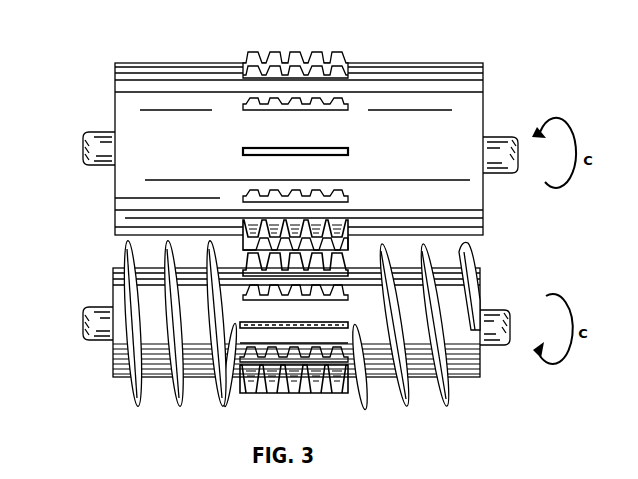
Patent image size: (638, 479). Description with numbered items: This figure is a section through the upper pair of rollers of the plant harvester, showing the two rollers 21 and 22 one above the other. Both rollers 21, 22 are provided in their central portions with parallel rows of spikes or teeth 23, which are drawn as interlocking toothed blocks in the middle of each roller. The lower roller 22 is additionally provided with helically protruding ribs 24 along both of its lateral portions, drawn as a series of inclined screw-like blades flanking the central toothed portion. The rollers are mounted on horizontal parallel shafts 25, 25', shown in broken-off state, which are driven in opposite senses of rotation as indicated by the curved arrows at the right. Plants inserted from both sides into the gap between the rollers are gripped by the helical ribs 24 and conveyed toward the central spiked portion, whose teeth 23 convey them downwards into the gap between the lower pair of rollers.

The roller 21 is at (425, 90).
The roller 22 is at (473, 380).
The spikes or teeth 23 is at (343, 55).
The helically protruding ribs 24 is at (181, 395).
The shaft 25 is at (77, 142).
The shaft 25' is at (70, 318).